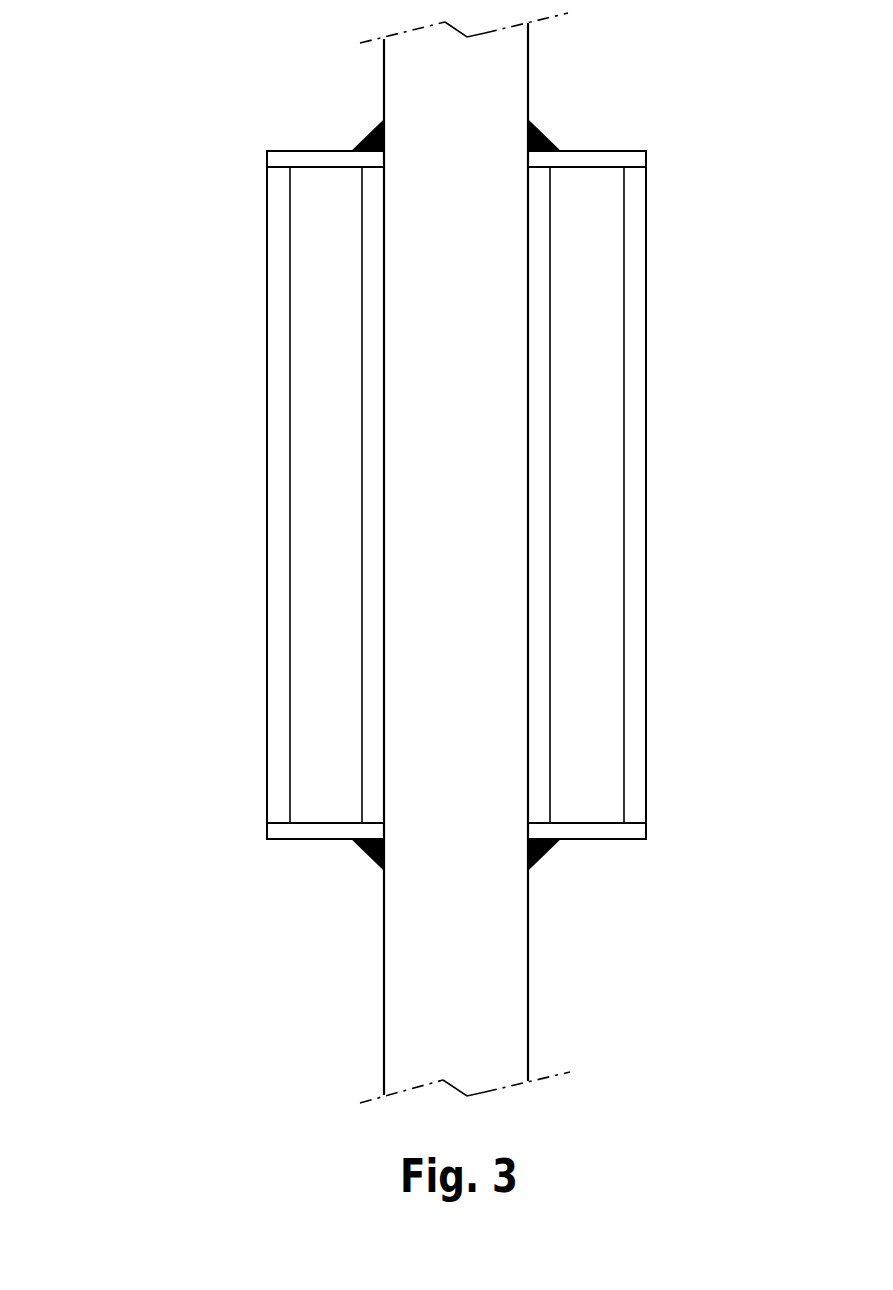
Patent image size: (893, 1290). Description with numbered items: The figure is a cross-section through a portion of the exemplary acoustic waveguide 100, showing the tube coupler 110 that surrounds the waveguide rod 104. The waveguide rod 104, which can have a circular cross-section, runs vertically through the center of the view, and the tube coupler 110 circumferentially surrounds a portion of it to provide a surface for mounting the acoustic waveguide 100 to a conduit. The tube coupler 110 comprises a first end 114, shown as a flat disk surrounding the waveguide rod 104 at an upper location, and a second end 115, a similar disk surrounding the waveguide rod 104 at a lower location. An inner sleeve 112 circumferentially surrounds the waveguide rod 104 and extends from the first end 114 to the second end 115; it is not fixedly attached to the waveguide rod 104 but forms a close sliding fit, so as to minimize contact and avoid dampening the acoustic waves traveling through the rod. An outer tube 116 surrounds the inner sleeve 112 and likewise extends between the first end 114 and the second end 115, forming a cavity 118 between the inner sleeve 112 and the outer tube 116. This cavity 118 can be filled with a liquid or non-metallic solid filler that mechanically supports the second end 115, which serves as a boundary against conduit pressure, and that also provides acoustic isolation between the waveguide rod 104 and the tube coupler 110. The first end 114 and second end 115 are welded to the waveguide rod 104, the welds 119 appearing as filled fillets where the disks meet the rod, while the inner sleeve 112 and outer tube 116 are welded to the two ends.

The acoustic waveguide 100 is at (205, 128).
The waveguide rod 104 is at (485, 975).
The tube coupler 110 is at (267, 508).
The inner sleeve 112 is at (540, 634).
The first end 114 is at (598, 158).
The second end 115 is at (610, 832).
The outer tube 116 is at (637, 413).
The cavity 118 is at (588, 515).
The weld 119 is at (367, 133).